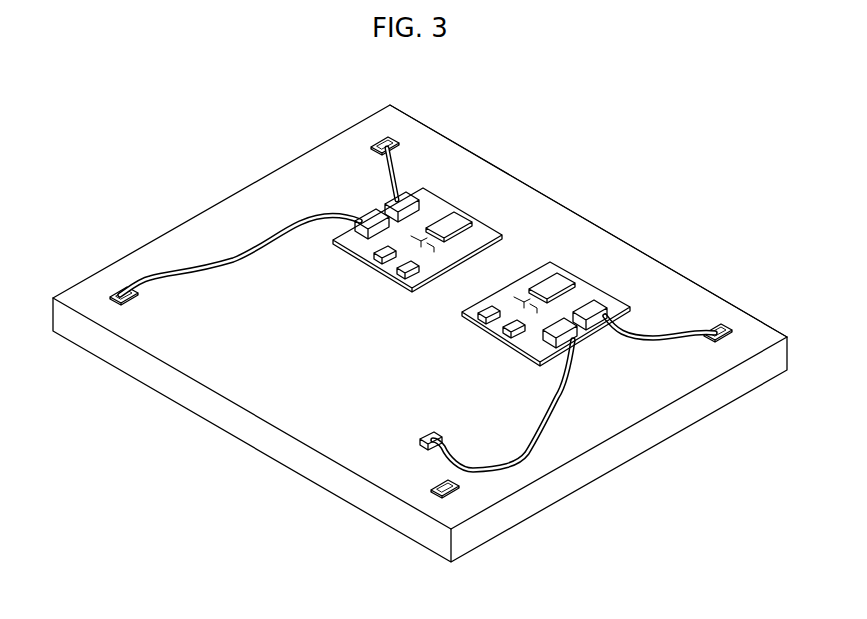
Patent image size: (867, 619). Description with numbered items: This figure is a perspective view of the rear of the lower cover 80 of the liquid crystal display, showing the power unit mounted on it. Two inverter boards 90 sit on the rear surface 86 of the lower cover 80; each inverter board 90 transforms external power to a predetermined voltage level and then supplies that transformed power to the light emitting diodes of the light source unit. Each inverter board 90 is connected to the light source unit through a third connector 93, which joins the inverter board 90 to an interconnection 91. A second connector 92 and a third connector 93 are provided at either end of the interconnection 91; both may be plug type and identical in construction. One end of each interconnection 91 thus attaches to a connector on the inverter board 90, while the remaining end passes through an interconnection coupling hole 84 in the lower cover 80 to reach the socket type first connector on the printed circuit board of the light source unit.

The lower cover 80 is at (652, 437).
The interconnection coupling hole 84 is at (388, 143).
The rear surface 86 is at (547, 220).
The inverter board 90 is at (443, 203).
The interconnection 91 is at (192, 270).
The second connector 92 is at (422, 433).
The third connector 93 is at (387, 208).